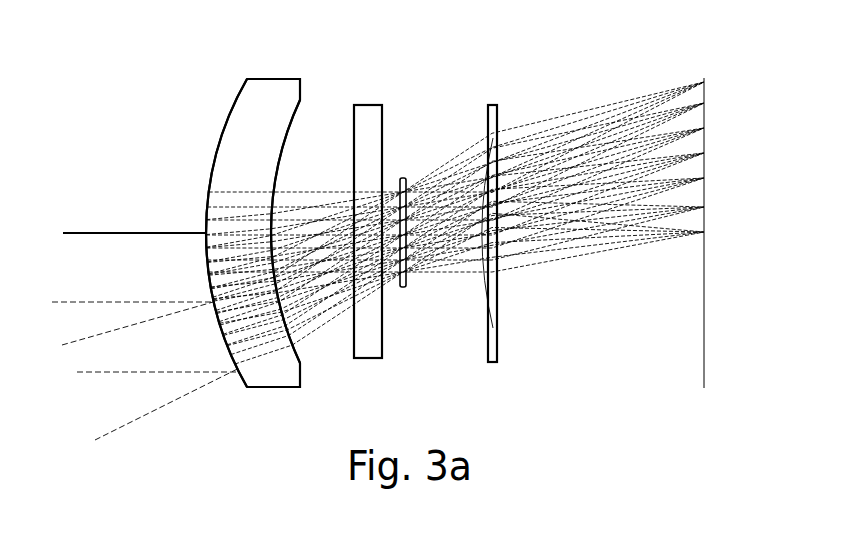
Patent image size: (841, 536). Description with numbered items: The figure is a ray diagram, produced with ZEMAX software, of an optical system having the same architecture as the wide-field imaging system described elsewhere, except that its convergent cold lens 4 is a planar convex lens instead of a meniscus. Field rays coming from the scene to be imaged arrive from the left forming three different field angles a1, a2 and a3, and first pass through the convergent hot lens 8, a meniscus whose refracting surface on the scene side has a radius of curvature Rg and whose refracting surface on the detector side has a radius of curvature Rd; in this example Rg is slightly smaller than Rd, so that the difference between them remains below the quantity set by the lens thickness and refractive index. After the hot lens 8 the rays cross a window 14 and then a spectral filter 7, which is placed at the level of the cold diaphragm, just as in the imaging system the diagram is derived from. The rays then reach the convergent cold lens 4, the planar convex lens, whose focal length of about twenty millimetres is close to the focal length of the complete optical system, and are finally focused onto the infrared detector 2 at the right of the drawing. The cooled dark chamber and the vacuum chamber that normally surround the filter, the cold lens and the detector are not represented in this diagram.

The convergent hot lens 8 is at (272, 388).
The radius of curvature of the scene-side refracting surface of the hot lens Rg is at (221, 137).
The radius of curvature of the detector-side refracting surface of the hot lens Rd is at (287, 132).
The field angle a1 is at (134, 224).
The field angle a2 is at (100, 306).
The field angle a3 is at (163, 376).
The window 14 is at (367, 359).
The spectral filter 7 is at (403, 289).
The convergent cold lens 4 is at (497, 346).
The infrared detector 2 is at (703, 356).